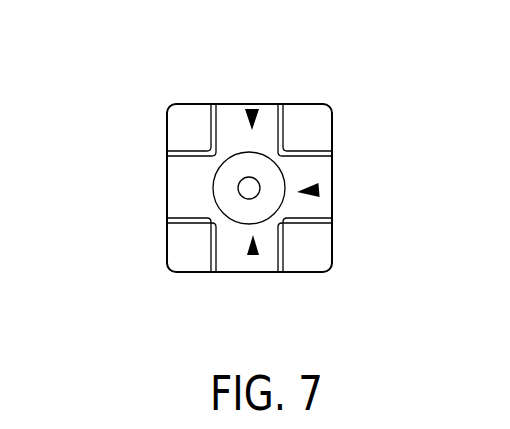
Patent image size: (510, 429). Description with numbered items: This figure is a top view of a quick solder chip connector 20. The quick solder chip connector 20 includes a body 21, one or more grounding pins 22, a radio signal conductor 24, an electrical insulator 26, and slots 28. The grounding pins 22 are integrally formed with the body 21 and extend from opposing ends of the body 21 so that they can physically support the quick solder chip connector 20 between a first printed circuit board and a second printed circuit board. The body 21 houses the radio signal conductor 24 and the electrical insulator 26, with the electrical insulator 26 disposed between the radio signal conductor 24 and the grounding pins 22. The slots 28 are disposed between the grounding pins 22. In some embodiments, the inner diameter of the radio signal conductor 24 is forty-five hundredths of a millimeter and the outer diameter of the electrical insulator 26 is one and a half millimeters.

The quick solder chip connector 20 is at (134, 78).
The body 21 is at (235, 248).
The grounding pins 22 is at (178, 132).
The radio signal conductor 24 is at (248, 190).
The electrical insulator 26 is at (253, 218).
The slots 28 is at (252, 110).